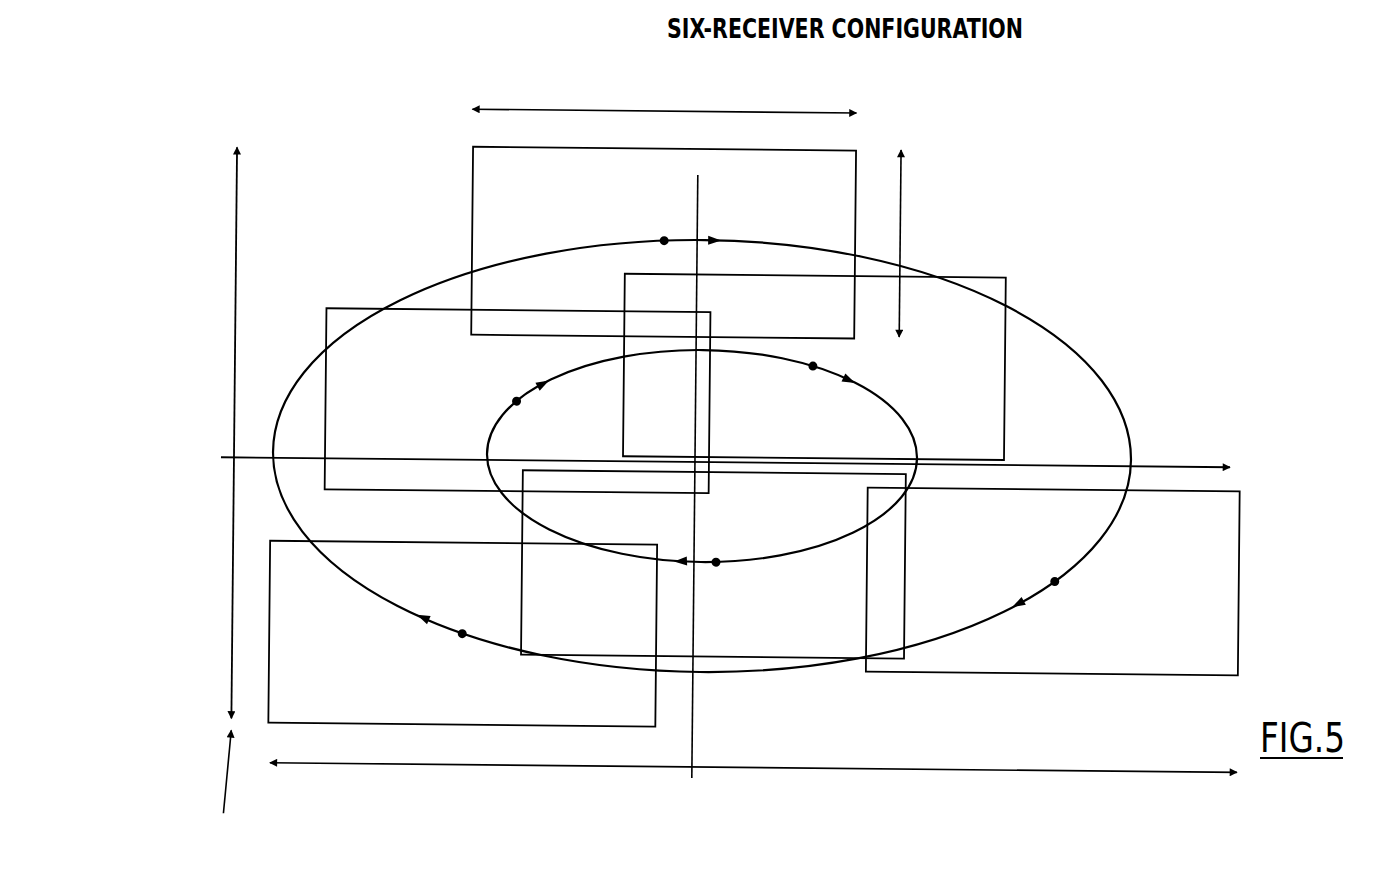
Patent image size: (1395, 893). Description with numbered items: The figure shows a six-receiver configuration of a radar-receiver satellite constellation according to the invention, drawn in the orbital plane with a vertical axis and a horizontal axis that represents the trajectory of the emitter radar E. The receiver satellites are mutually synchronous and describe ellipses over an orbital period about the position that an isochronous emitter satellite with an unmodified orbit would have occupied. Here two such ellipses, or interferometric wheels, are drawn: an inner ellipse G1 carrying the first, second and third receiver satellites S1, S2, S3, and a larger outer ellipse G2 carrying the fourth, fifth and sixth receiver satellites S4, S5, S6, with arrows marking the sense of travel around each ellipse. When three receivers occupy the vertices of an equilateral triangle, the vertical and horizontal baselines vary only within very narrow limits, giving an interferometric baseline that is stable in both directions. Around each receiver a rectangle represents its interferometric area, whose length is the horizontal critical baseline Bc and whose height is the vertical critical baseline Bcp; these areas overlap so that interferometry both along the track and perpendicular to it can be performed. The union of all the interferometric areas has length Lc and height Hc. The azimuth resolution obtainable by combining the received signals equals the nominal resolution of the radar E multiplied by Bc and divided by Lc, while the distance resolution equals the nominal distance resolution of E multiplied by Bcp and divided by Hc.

The first receiver satellite S1 is at (518, 400).
The second receiver satellite S2 is at (814, 367).
The third receiver satellite S3 is at (713, 564).
The fourth receiver satellite S4 is at (663, 243).
The fifth receiver satellite S5 is at (1053, 582).
The sixth receiver satellite S6 is at (462, 634).
The first ellipse G1 is at (901, 405).
The second ellipse G2 is at (1079, 353).
The horizontal critical baseline Bc is at (664, 108).
The vertical critical baseline Bcp is at (1006, 244).
The height of the union of interferometric areas Hc is at (388, 493).
The length of the union of interferometric areas Lc is at (753, 749).
The radar emitter E is at (1358, 462).